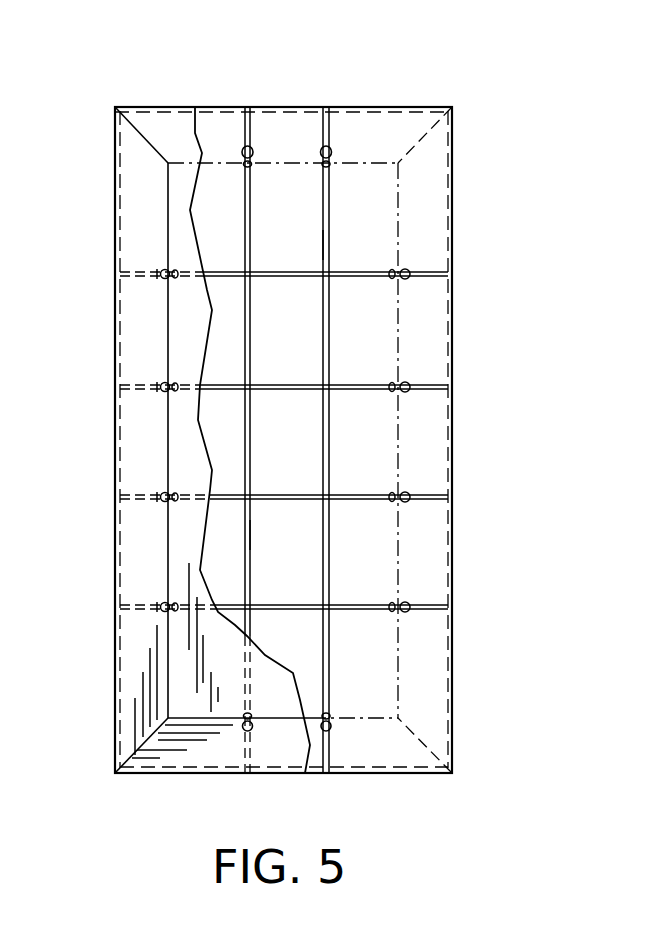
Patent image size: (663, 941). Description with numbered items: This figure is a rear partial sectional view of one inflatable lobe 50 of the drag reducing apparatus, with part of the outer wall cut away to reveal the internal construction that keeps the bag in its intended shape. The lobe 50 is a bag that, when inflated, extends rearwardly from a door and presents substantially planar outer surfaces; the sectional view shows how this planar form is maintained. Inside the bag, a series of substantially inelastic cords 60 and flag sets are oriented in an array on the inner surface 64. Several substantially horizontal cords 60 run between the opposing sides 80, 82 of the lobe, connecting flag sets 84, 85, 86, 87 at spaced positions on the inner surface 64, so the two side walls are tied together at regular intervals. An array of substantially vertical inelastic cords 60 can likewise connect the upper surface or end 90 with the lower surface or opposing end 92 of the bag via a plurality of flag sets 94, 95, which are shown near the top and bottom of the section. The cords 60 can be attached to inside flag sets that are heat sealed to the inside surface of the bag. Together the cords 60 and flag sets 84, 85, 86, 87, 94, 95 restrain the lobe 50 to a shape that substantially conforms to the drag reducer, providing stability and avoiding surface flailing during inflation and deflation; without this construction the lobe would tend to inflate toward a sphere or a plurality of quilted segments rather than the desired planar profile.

The inflatable lobe 50 is at (447, 70).
The substantially inelastic cords 60 is at (352, 272).
The inner surface 64 is at (447, 220).
The side of lobe 80 is at (455, 343).
The opposing side of lobe 82 is at (130, 325).
The flag set 84 is at (425, 271).
The flag set 85 is at (425, 390).
The flag set 86 is at (425, 497).
The flag set 87 is at (428, 605).
The upper surface or end 90 is at (358, 105).
The lower surface or opposing end 92 is at (213, 747).
The flag set 94 is at (315, 122).
The flag set 95 is at (236, 122).